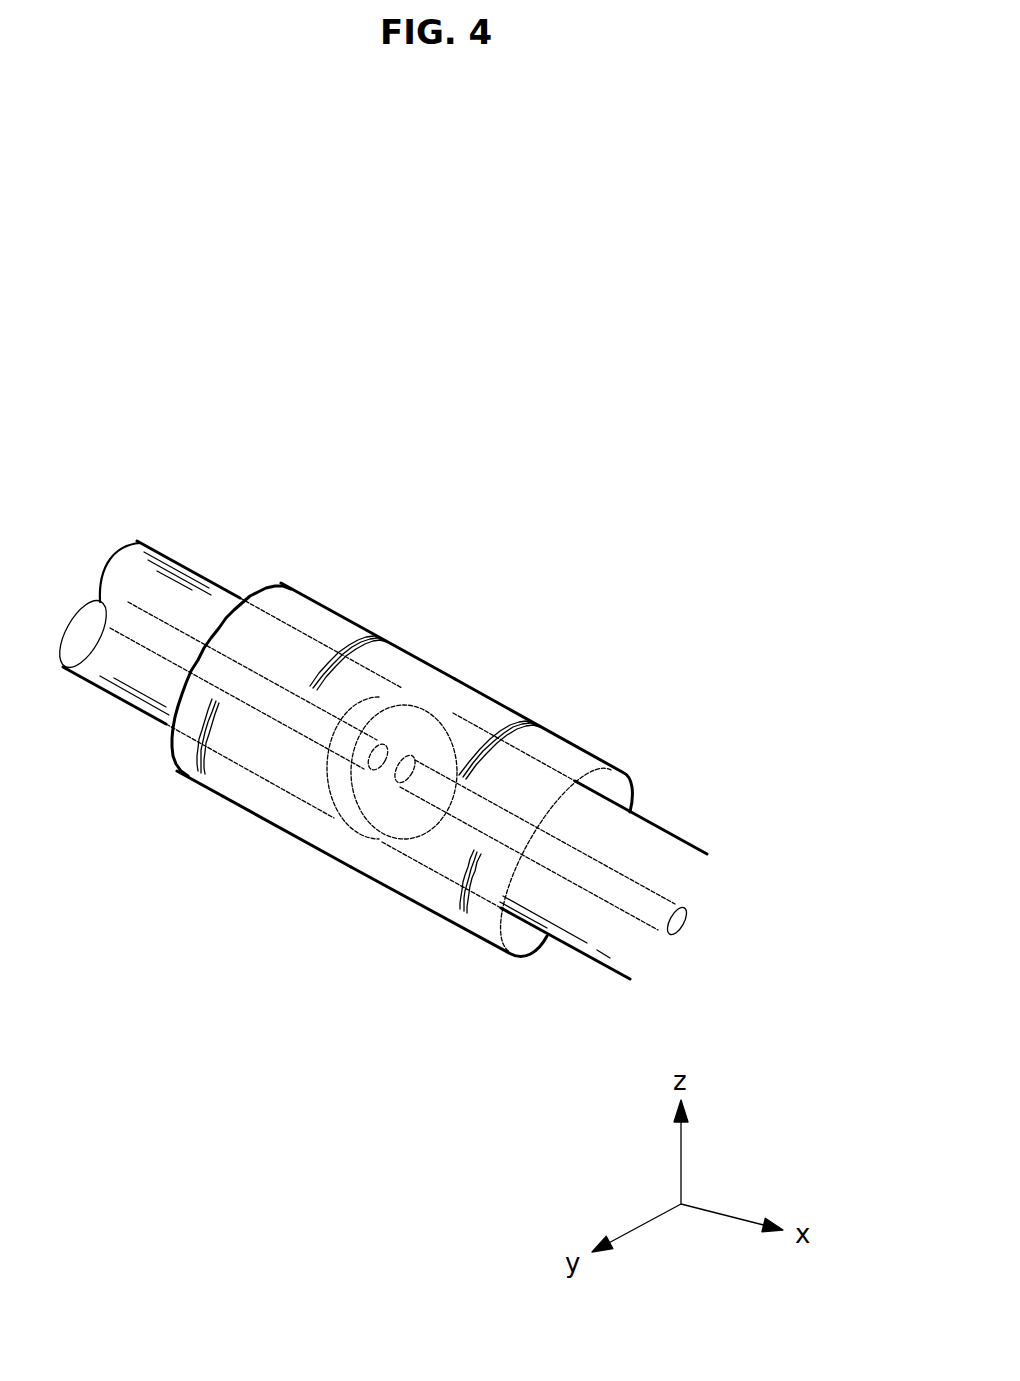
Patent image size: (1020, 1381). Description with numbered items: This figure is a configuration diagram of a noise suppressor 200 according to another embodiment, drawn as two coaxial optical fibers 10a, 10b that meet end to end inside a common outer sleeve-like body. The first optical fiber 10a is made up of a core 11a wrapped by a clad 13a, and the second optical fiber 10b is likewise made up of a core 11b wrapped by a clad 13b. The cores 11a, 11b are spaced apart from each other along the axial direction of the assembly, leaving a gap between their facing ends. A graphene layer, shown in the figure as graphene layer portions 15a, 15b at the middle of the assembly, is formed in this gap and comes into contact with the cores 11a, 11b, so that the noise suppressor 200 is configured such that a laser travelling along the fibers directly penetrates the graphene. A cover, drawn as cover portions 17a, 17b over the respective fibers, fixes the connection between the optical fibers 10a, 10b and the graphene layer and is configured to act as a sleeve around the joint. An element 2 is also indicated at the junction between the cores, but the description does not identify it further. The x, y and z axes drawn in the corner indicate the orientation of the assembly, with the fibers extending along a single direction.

The noise suppressor 200 is at (118, 245).
The optical fiber 10a is at (303, 387).
The core 11a is at (192, 570).
The clad 13a is at (228, 583).
The cover 17a is at (350, 613).
The graphene layer 15a is at (388, 697).
The graphene layer 15b is at (443, 733).
The cover 17b is at (560, 737).
The optical fiber 10b is at (747, 625).
The clad 13b is at (607, 805).
The core 11b is at (670, 895).
The pin 2 is at (376, 762).